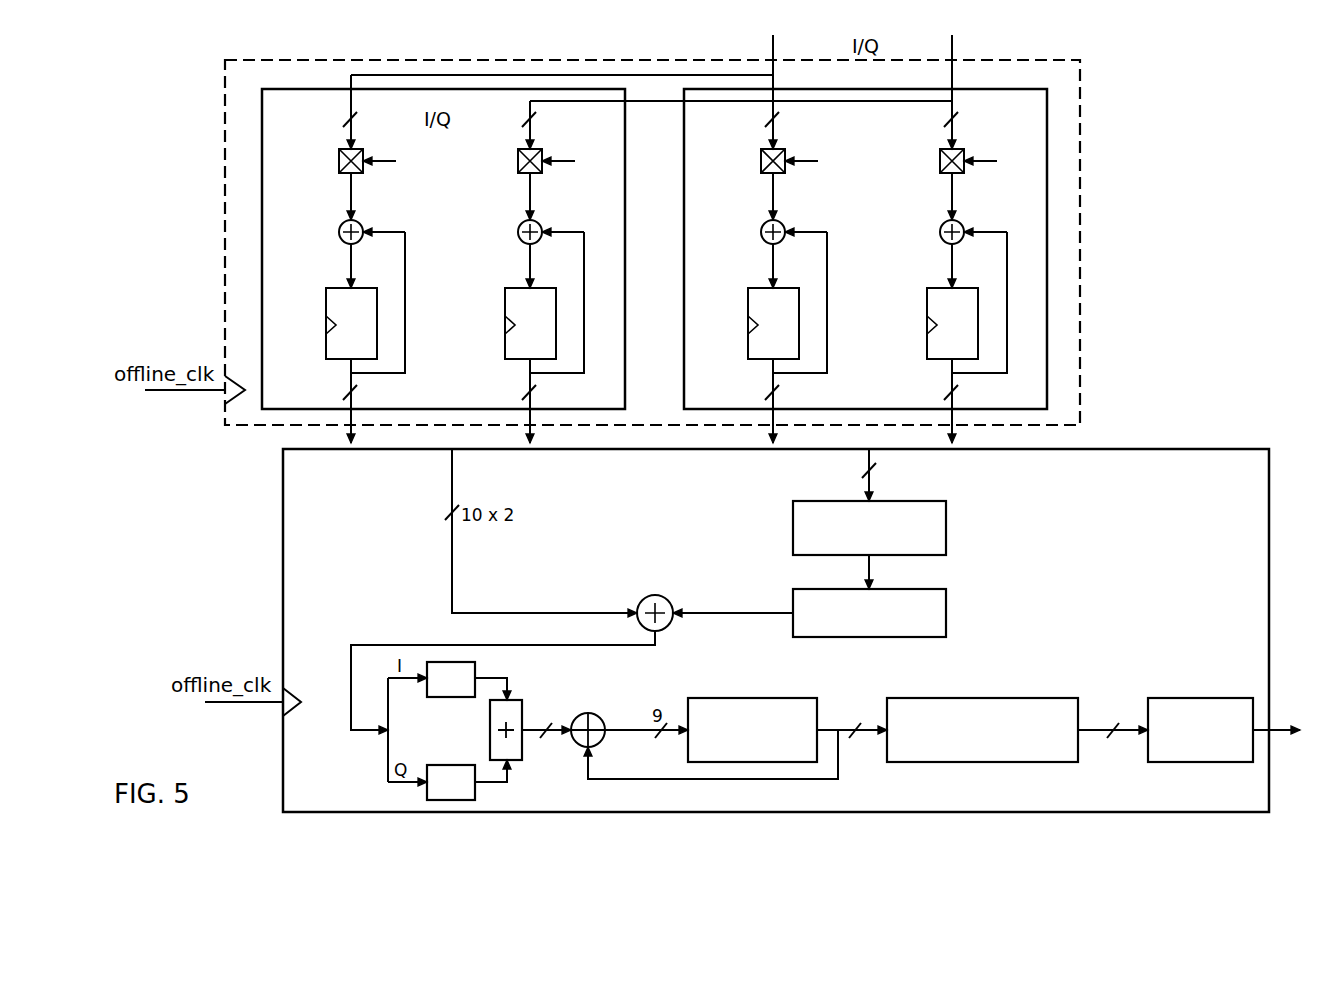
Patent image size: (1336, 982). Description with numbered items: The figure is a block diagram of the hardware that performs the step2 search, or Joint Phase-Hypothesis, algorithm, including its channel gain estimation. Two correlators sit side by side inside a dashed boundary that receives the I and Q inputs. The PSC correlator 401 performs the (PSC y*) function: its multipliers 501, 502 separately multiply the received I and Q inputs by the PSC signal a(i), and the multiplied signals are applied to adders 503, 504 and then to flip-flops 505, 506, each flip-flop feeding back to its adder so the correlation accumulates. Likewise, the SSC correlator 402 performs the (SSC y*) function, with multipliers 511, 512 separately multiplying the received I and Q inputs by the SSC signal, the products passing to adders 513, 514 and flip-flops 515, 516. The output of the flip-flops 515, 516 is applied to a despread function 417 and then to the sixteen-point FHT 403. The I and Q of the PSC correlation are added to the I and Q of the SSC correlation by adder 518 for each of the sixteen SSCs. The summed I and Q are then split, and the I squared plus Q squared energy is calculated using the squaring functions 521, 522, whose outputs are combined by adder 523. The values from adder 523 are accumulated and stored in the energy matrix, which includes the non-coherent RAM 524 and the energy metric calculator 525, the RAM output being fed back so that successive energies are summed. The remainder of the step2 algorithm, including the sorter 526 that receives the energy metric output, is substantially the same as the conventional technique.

The PSC correlator 401 is at (298, 90).
The SSC correlator 402 is at (1007, 89).
The FHT 403 is at (915, 589).
The despreader with B[15:0] 417 is at (946, 516).
The multiplier 501 is at (341, 161).
The multiplier 502 is at (520, 161).
The adder 503 is at (342, 222).
The adder 504 is at (521, 222).
The flip-flop 505 is at (340, 362).
The flip-flop 506 is at (519, 362).
The multiplier 511 is at (763, 161).
The multiplier 512 is at (942, 161).
The adder 513 is at (764, 222).
The adder 514 is at (943, 222).
The flip-flop 515 is at (762, 362).
The flip-flop 516 is at (941, 362).
The adder 518 is at (660, 595).
The squaring function 521 is at (455, 698).
The squaring function 522 is at (455, 765).
The adder 523 is at (516, 760).
The non-coherent (ncoh) RAM 524 is at (757, 698).
The energy matrix 525 is at (1020, 698).
The sorter 526 is at (1208, 698).